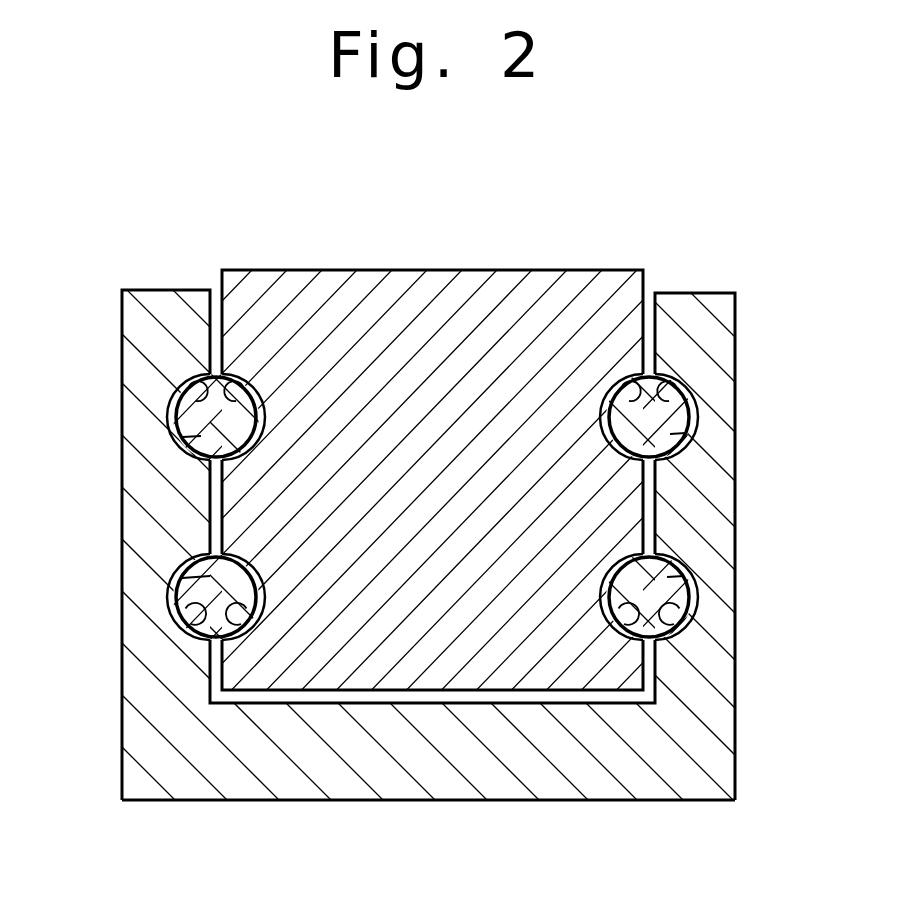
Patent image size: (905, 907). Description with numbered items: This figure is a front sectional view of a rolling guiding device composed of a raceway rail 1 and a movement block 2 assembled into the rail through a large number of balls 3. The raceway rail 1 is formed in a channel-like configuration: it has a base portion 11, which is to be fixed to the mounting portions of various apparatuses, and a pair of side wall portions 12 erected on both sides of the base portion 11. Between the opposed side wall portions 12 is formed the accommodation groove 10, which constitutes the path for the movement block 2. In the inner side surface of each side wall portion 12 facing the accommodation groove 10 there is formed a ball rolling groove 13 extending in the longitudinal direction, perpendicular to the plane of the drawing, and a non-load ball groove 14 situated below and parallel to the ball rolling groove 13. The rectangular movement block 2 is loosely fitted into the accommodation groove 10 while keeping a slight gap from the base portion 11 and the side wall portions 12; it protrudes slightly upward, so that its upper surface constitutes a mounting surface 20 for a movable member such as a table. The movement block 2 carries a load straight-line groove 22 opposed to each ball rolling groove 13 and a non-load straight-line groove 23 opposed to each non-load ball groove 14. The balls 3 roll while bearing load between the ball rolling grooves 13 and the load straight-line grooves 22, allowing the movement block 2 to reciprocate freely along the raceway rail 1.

The raceway rail 1 is at (777, 653).
The movement block 2 is at (640, 256).
The balls 3 is at (200, 578).
The accommodation groove 10 is at (401, 692).
The base portion 11 is at (494, 800).
The side wall portions 12 is at (122, 310).
The ball rolling groove 13 is at (207, 377).
The non-load ball groove 14 is at (190, 622).
The mounting surface 20 is at (387, 270).
The load straight-line groove 22 is at (222, 374).
The non-load straight-line groove 23 is at (234, 637).